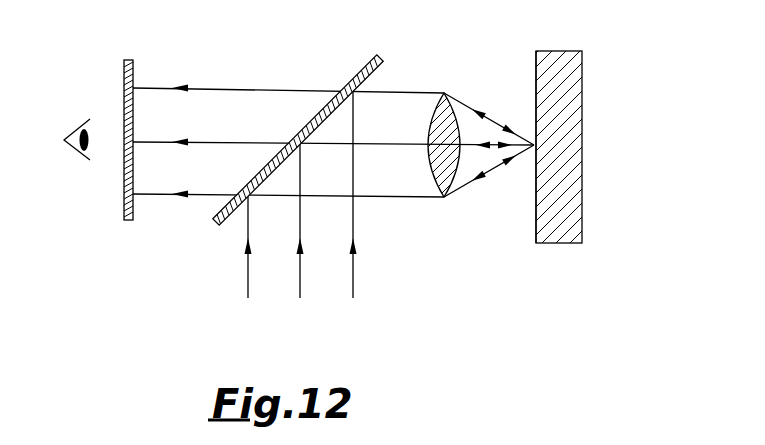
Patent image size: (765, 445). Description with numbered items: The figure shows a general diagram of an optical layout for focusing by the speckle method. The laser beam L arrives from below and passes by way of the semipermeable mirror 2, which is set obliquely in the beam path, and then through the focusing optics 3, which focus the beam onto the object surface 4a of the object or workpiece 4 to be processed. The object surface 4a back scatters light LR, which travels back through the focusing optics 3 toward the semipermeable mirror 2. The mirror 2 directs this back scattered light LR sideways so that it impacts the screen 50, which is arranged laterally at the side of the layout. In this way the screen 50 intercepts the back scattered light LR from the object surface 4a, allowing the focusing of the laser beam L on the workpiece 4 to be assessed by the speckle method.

The screen 50 is at (133, 73).
The semipermeable mirror 2 is at (384, 70).
The focusing optics 3 is at (433, 188).
The object or workpiece 4 is at (576, 66).
The object surface 4a is at (534, 224).
The back scattered light LR is at (272, 142).
The laser beam L is at (354, 307).